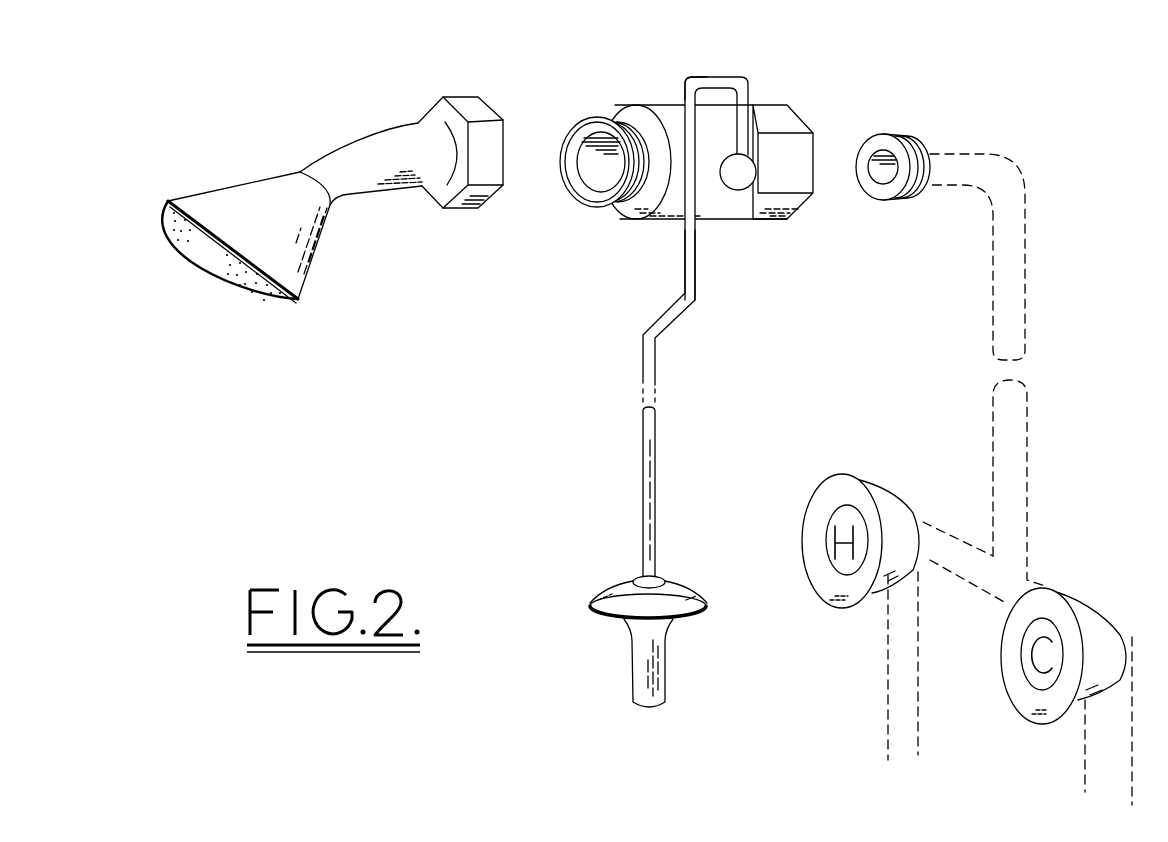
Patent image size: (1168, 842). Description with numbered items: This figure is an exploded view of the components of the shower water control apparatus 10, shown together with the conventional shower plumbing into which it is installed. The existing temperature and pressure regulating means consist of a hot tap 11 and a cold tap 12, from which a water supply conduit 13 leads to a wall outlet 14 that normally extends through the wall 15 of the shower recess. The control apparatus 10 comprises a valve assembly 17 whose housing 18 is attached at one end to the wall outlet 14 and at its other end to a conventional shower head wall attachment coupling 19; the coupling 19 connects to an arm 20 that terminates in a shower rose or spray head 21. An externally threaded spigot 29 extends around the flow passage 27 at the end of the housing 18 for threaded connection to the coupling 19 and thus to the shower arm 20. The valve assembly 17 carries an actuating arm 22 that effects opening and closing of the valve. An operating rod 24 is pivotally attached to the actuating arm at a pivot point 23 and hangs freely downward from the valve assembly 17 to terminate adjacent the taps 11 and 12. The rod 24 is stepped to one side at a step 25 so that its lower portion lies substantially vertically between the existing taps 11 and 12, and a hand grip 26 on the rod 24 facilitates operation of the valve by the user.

The shower water control apparatus 10 is at (520, 398).
The hot tap 11 is at (818, 509).
The cold tap 12 is at (1108, 645).
The water supply conduit 13 is at (1013, 308).
The wall outlet 14 is at (920, 196).
The wall 15 is at (950, 154).
The valve assembly 17 is at (721, 193).
The housing 18 is at (776, 108).
The shower head wall attachment coupling 19 is at (458, 210).
The arm 20 is at (350, 168).
The shower rose or spray head 21 is at (260, 205).
The actuating arm 22 is at (726, 77).
The pivot point 23 is at (683, 82).
The operating rod 24 is at (640, 507).
The step 25 is at (683, 295).
The hand grip 26 is at (622, 602).
The flow passage 27 is at (608, 172).
The externally threaded spigot 29 is at (619, 116).